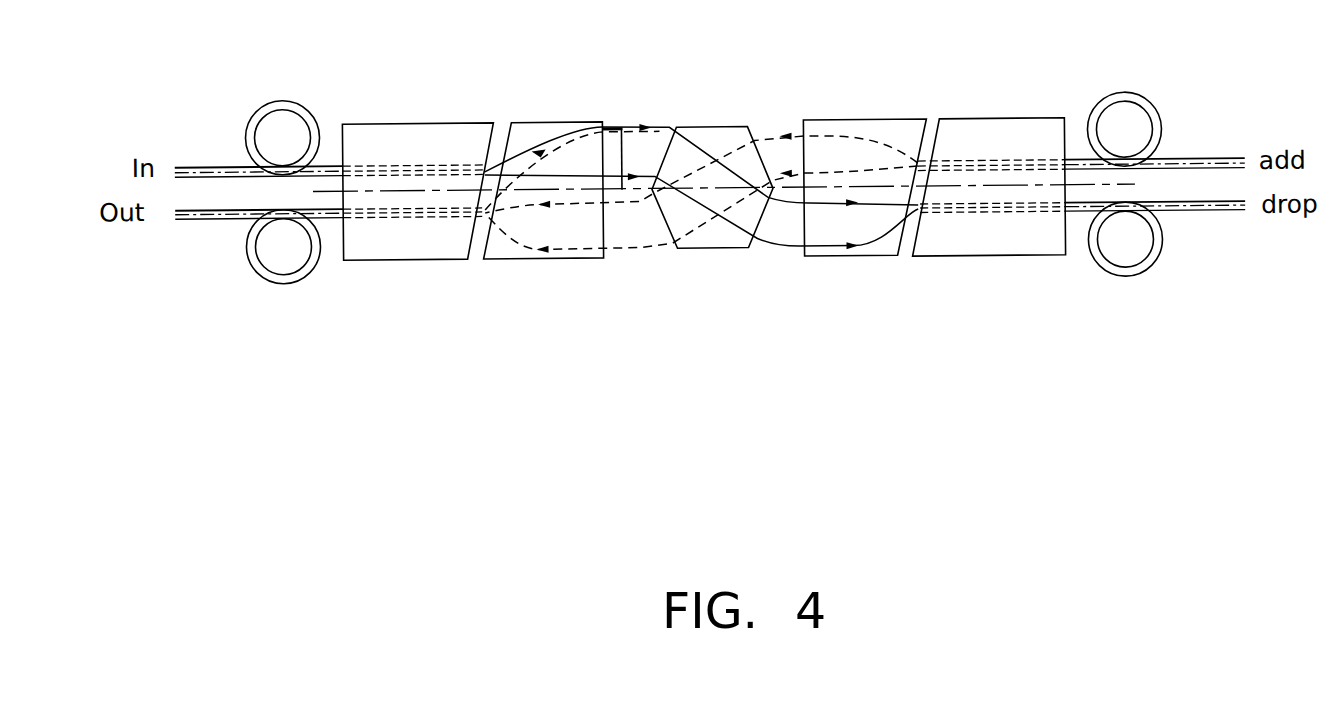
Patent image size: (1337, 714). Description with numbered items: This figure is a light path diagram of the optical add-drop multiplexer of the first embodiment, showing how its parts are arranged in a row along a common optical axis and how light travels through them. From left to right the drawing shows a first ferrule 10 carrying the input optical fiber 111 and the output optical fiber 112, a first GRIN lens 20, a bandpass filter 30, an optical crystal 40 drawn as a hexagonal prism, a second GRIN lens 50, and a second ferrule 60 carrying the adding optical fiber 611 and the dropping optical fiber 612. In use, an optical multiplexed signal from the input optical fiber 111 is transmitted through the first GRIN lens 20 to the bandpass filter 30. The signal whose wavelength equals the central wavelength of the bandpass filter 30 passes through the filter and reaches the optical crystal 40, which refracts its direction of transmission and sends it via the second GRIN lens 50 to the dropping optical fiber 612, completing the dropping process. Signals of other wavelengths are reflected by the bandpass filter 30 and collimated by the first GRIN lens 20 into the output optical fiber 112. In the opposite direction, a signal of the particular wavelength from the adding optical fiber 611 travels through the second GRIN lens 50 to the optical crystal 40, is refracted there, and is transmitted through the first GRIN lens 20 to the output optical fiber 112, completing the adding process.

The first ferrule 10 is at (412, 131).
The first graded index (GRIN) lens 20 is at (532, 127).
The bandpass filter 30 is at (612, 149).
The optical crystal 40 is at (748, 126).
The second GRIN lens 50 is at (895, 135).
The second ferrule 60 is at (988, 138).
The input optical fiber 111 is at (284, 103).
The output optical fiber 112 is at (284, 274).
The adding optical fiber 611 is at (1125, 102).
The dropping optical fiber 612 is at (1130, 268).